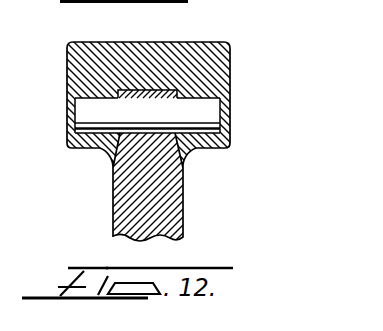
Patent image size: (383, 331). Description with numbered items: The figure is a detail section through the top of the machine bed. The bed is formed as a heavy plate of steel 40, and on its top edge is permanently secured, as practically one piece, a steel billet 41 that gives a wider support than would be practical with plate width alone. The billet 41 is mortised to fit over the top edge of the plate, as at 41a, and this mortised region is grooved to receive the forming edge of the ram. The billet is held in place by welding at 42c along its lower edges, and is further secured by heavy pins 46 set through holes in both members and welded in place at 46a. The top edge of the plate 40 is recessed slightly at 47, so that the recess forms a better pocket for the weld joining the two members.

The plate of steel 40 is at (160, 197).
The steel billet 41 is at (230, 67).
The mortise 41a is at (157, 90).
The heavy pins 46 is at (202, 120).
The pin weld 46a is at (231, 118).
The weld 42c is at (183, 162).
The recess 47 is at (113, 179).